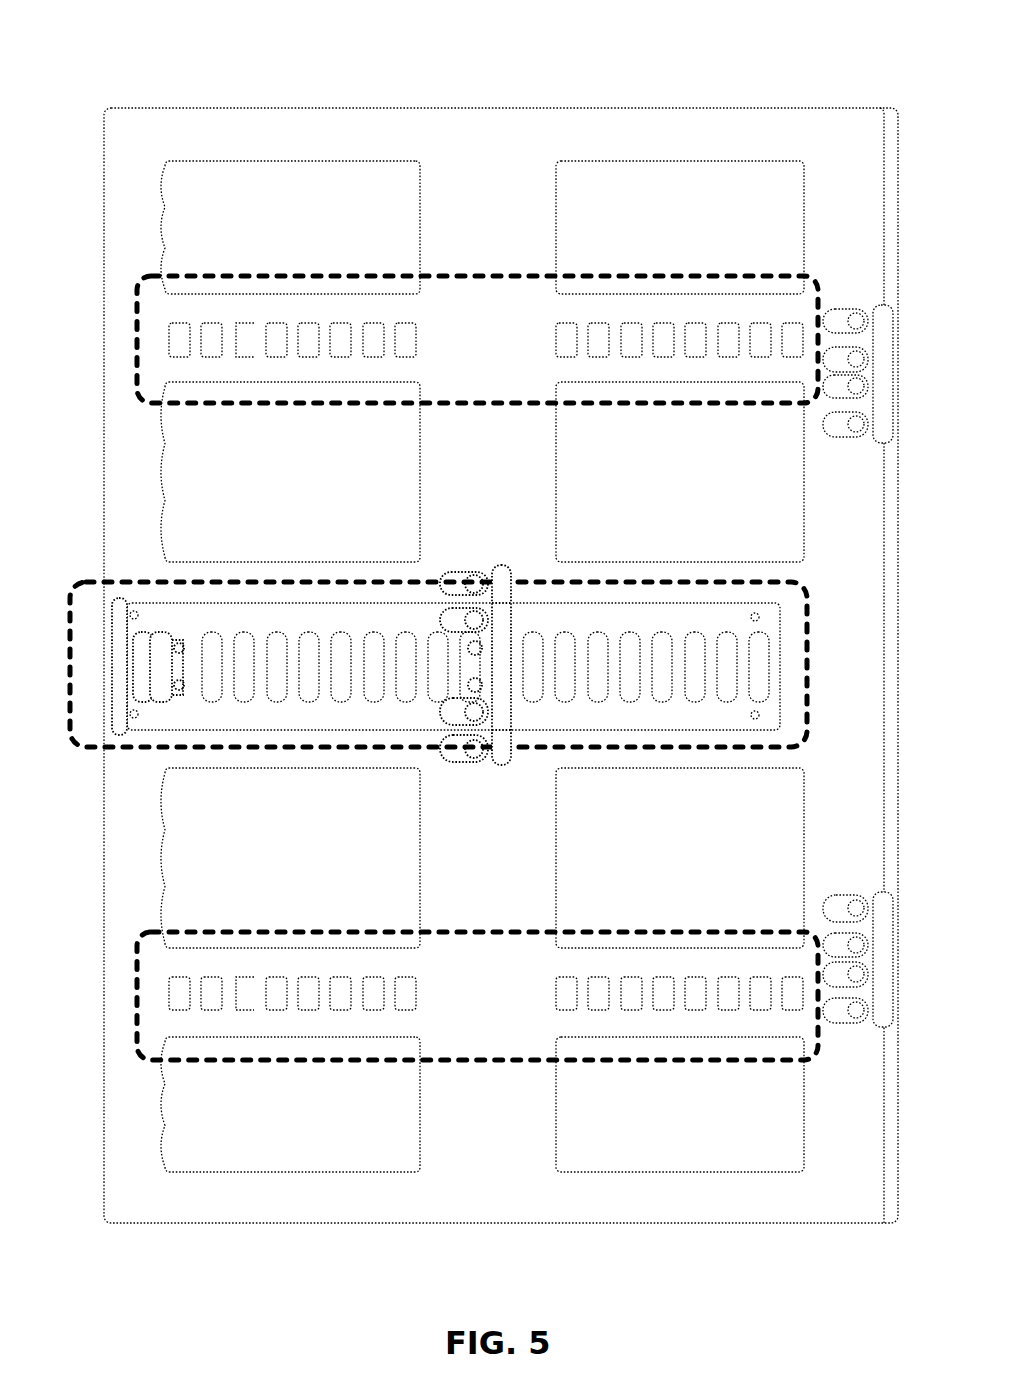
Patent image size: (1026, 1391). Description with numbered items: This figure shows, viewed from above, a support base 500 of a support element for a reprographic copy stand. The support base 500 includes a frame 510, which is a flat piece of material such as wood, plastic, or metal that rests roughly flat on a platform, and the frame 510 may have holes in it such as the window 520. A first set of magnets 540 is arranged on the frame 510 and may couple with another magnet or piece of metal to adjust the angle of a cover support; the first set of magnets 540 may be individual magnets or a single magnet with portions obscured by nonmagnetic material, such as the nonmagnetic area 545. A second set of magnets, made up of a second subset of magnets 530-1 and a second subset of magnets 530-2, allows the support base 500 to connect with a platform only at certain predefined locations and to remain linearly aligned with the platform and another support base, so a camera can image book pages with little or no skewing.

The support base 500 is at (56, 66).
The frame 510 is at (795, 108).
The window 520 is at (328, 160).
The second subset of magnets 530-1 is at (472, 276).
The second subset of magnets 530-2 is at (472, 932).
The first set of magnets 540 is at (318, 581).
The nonmagnetic area 545 is at (290, 650).